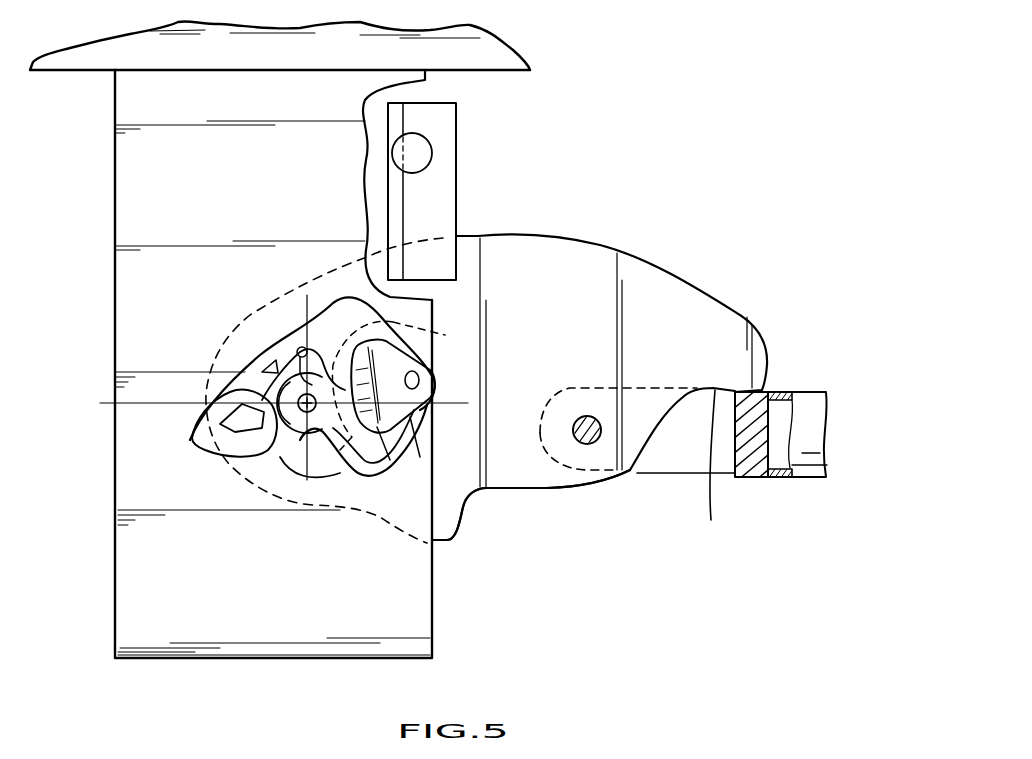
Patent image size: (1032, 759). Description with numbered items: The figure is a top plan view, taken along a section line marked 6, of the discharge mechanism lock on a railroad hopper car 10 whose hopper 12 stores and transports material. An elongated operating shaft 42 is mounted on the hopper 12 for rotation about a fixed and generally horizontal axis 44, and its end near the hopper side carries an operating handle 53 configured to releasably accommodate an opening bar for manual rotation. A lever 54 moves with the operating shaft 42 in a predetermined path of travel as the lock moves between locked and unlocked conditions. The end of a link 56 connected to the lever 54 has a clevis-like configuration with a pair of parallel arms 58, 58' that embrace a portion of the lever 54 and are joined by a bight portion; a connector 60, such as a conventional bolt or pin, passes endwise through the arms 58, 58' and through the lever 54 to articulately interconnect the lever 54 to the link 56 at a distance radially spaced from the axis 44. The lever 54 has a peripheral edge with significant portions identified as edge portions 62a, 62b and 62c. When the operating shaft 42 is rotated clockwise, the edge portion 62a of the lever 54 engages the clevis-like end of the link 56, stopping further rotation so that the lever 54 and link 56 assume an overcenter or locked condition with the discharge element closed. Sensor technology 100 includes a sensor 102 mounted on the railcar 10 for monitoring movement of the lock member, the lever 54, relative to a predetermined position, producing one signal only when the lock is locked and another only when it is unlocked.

The hopper 12 is at (526, 42).
The sensor technology 100 is at (445, 143).
The sensor 102 is at (432, 162).
The railroad hopper car 10 is at (606, 228).
The operating shaft 42 is at (402, 385).
The axis 44 is at (307, 415).
The operating handle 53 is at (200, 442).
The section line 6 is at (577, 353).
The connector 60 is at (587, 444).
The lever 54 is at (465, 485).
The edge portion 62b is at (547, 490).
The edge portion 62c is at (463, 527).
The arm 58' is at (682, 453).
The arm 58 is at (752, 455).
The link 56 is at (810, 473).
The edge portion 62a is at (722, 471).